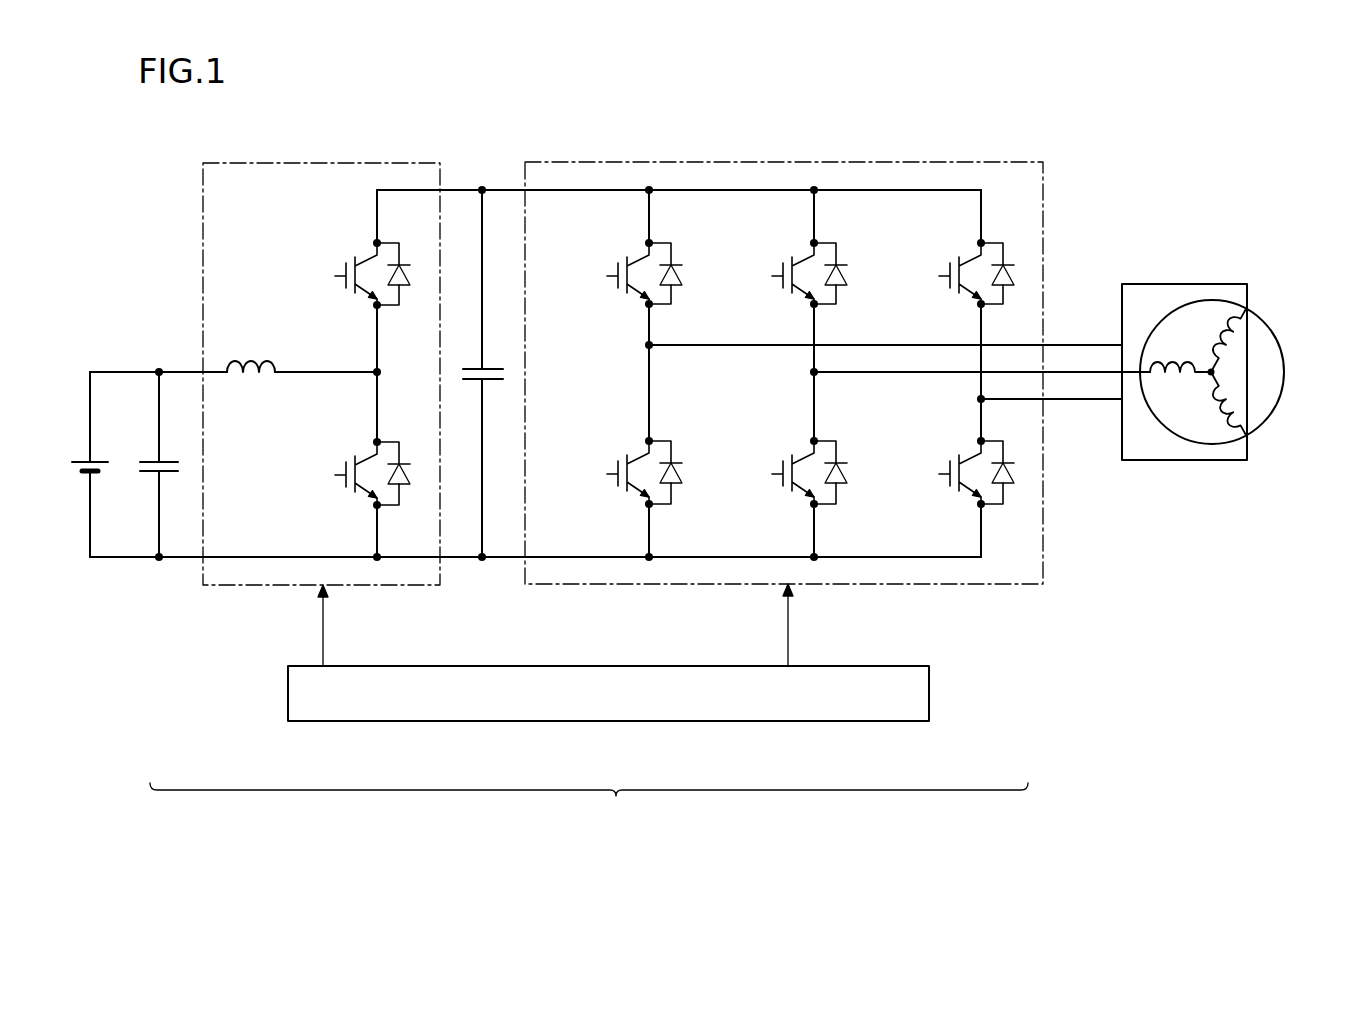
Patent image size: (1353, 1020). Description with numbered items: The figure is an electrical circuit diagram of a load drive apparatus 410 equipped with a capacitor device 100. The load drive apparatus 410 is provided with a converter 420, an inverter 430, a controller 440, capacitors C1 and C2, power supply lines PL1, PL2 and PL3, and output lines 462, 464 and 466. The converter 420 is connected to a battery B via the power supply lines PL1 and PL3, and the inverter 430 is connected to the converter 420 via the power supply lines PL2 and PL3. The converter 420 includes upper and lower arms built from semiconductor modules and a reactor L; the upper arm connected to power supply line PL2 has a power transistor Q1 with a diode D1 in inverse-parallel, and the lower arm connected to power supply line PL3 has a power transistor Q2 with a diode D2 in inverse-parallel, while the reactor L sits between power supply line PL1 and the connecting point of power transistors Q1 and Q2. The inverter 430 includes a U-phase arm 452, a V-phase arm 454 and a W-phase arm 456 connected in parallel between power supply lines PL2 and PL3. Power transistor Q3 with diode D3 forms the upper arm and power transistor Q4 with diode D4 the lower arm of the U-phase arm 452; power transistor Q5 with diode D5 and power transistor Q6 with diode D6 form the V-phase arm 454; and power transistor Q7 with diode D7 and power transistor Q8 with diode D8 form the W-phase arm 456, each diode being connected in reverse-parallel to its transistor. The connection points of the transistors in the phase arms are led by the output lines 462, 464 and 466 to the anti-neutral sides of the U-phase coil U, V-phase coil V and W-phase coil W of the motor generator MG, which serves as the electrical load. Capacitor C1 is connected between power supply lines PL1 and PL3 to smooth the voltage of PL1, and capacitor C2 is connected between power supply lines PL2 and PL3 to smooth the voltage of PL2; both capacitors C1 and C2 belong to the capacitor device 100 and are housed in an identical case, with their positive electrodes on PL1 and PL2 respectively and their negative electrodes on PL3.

The capacitor device 100 is at (183, 602).
The load drive apparatus 410 is at (589, 803).
The converter 420 is at (324, 163).
The inverter 430 is at (987, 162).
The controller 440 is at (892, 722).
The U-phase arm 452 is at (643, 359).
The V-phase arm 454 is at (805, 385).
The W-phase arm 456 is at (972, 407).
The output line 462 is at (683, 346).
The output line 464 is at (895, 373).
The output line 466 is at (1087, 400).
The power supply line PL1 is at (144, 370).
The power supply line PL2 is at (460, 190).
The power supply line PL3 is at (457, 560).
The battery B is at (76, 459).
The capacitor C1 is at (172, 459).
The capacitor C2 is at (495, 366).
The reactor L is at (247, 358).
The power transistor Q1 is at (351, 257).
The power transistor Q2 is at (351, 456).
The power transistor Q3 is at (623, 257).
The power transistor Q4 is at (622, 455).
The power transistor Q5 is at (788, 257).
The power transistor Q6 is at (787, 455).
The power transistor Q7 is at (955, 257).
The power transistor Q8 is at (954, 455).
The diode D1 is at (410, 268).
The diode D2 is at (410, 467).
The diode D3 is at (683, 268).
The diode D4 is at (683, 466).
The diode D5 is at (848, 268).
The diode D6 is at (848, 466).
The diode D7 is at (1015, 268).
The diode D8 is at (1014, 478).
The motor generator MG is at (1280, 340).
The U-phase coil U is at (1230, 338).
The V-phase coil V is at (1180, 355).
The W-phase coil W is at (1221, 406).